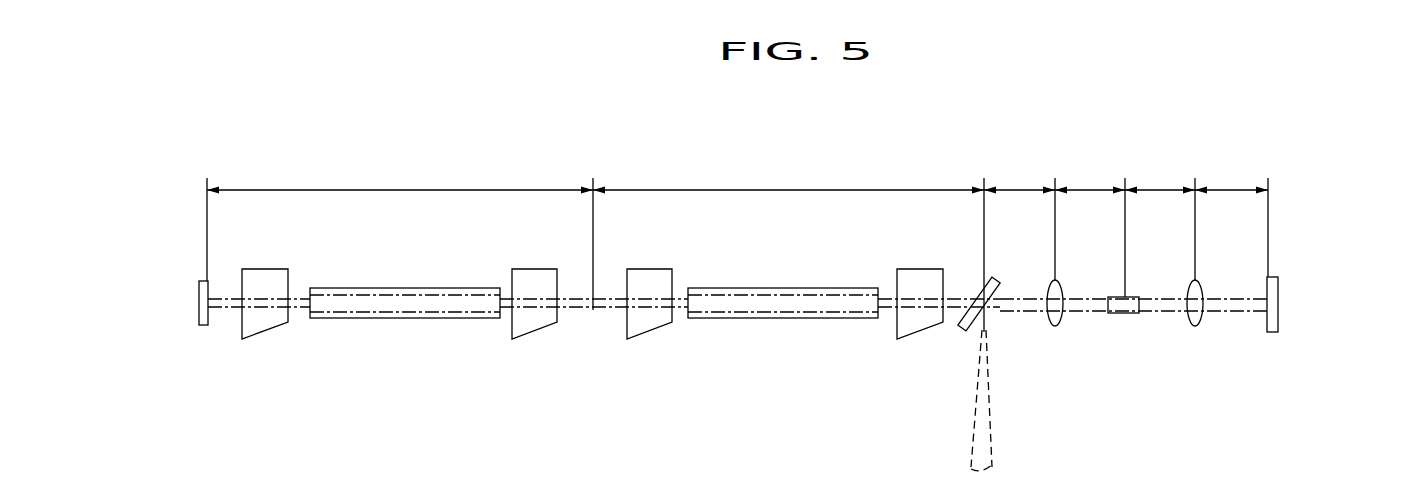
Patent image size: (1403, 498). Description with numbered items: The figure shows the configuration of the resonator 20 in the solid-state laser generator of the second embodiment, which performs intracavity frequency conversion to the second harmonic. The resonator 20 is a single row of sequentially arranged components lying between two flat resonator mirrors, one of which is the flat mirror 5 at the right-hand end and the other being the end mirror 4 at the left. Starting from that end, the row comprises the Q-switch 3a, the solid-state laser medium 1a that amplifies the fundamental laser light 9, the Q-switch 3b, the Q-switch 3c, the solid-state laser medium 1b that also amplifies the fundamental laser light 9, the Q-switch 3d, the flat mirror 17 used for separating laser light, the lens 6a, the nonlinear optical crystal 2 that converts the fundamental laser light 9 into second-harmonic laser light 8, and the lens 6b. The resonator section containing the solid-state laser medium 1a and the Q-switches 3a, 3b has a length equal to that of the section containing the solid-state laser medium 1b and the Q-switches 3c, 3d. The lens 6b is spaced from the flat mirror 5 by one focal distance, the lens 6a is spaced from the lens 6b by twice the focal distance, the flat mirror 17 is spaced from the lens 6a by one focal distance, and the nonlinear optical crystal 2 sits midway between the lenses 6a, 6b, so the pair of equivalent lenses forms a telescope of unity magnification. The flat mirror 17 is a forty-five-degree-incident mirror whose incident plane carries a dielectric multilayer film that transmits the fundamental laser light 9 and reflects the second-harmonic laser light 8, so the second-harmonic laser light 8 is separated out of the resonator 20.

The resonator 20 is at (1203, 134).
The rear mirror 4 is at (199, 325).
The Q-switch 3a is at (263, 269).
The solid-state laser medium 1a is at (377, 320).
The Q-switch 3b is at (534, 269).
The fundamental laser light 9 is at (593, 310).
The Q-switch 3c is at (648, 269).
The solid-state laser medium 1b is at (798, 320).
The Q-switch 3d is at (918, 269).
The flat mirror 17 is at (961, 328).
The second-harmonic laser light 8 is at (996, 427).
The lens 6a is at (1055, 327).
The nonlinear optical crystal 2 is at (1125, 313).
The lens 6b is at (1195, 327).
The flat mirror 5 is at (1271, 332).